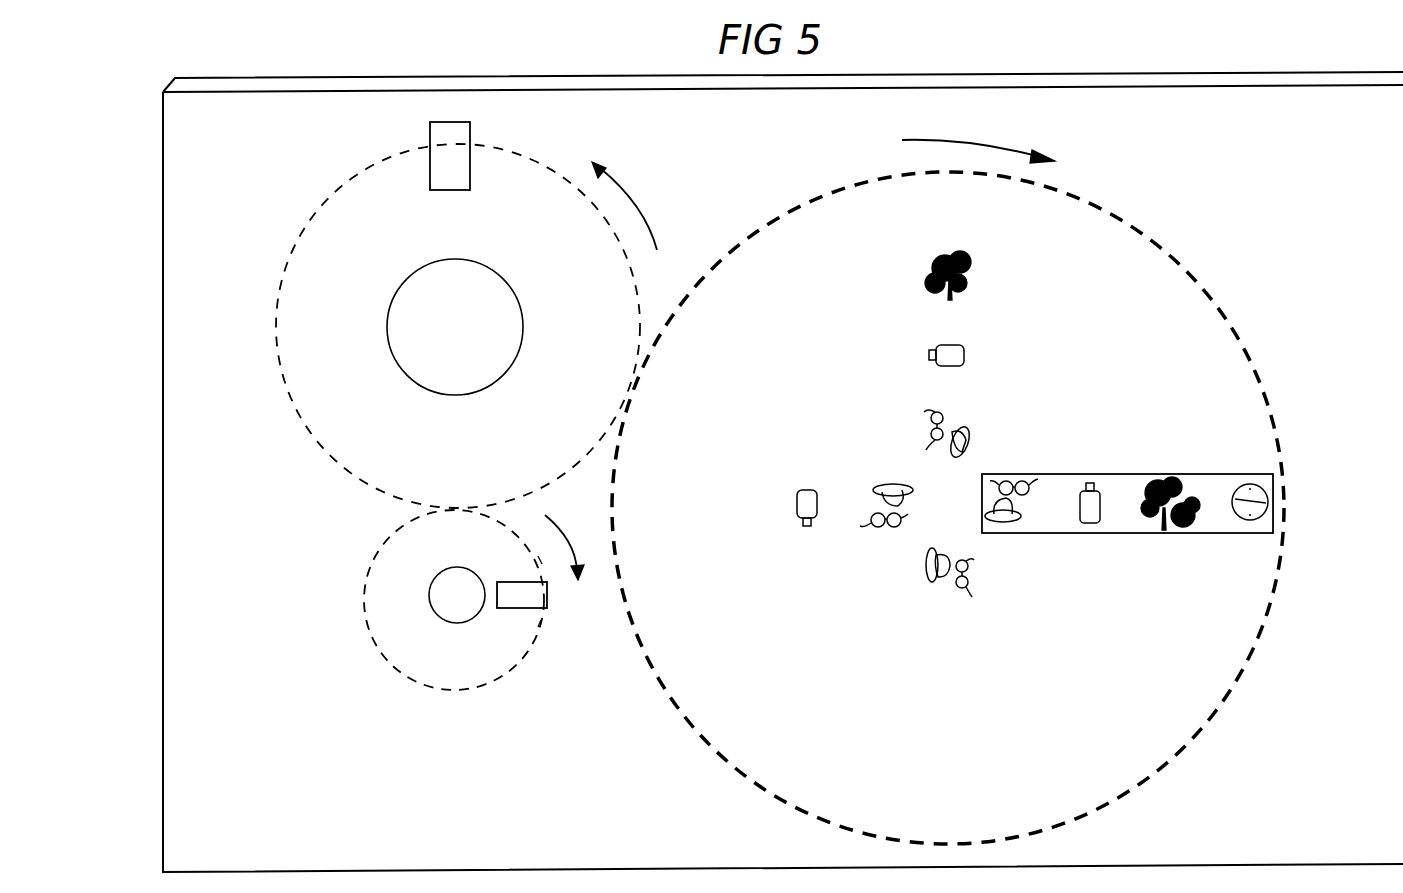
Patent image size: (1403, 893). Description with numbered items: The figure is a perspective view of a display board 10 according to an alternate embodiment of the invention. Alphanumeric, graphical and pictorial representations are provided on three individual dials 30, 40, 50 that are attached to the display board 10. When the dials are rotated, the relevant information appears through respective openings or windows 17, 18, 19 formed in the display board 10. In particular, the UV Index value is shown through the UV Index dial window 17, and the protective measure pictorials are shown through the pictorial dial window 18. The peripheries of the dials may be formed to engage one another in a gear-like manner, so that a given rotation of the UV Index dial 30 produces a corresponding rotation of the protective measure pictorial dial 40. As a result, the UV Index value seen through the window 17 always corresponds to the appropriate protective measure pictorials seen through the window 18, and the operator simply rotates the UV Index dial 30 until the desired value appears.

The display board 10 is at (1142, 72).
The UV Index dial window 17 is at (470, 136).
The pictorial dial window 18 is at (1273, 518).
The window 19 is at (530, 608).
The UV Index dial 30 is at (312, 455).
The protective measure pictorial dial 40 is at (666, 705).
The dial 50 is at (356, 625).